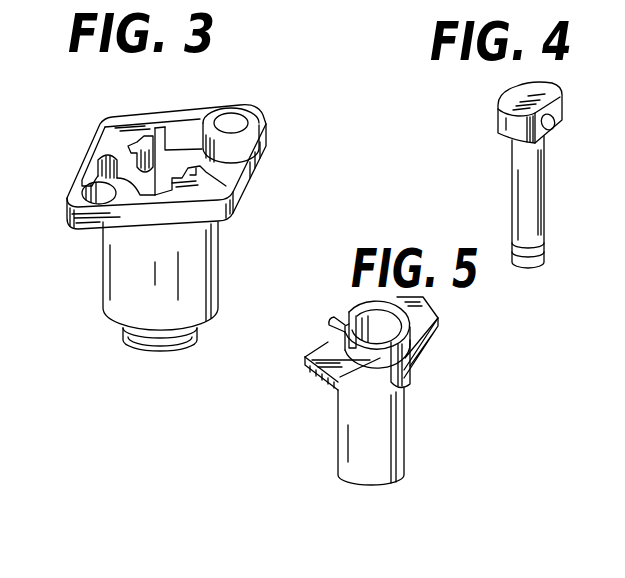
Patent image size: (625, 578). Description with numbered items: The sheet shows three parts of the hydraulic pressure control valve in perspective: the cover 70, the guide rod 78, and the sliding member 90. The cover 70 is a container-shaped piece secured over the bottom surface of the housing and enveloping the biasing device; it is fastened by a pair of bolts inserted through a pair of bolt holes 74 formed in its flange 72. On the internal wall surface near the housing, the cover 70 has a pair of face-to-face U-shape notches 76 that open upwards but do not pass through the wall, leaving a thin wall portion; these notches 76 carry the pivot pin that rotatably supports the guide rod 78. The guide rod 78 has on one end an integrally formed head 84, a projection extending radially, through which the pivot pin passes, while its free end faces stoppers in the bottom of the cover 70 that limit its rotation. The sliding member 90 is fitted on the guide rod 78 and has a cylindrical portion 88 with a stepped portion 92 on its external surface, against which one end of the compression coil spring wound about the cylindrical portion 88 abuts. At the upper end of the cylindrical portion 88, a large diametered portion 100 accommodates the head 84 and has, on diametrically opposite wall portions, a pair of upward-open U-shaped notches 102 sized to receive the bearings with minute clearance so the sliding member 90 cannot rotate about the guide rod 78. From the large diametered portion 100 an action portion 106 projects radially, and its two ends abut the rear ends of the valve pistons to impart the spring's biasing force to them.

In FIG. 3, the cover 70 is at (88, 291).
In FIG. 3, the flange 72 is at (245, 160).
In FIG. 3, the bolt holes 74 is at (230, 118).
In FIG. 3, the U-shape notches 76 is at (140, 142).
In FIG. 4, the guide rod 78 is at (523, 177).
In FIG. 4, the head 84 is at (514, 98).
In FIG. 5, the cylindrical portion 88 is at (345, 445).
In FIG. 5, the sliding member 90 is at (430, 432).
In FIG. 5, the stepped portion 92 is at (409, 386).
In FIG. 5, the large diametered portion 100 is at (330, 322).
In FIG. 5, the U-shaped notches 102 is at (349, 313).
In FIG. 5, the action portion 106 is at (318, 363).